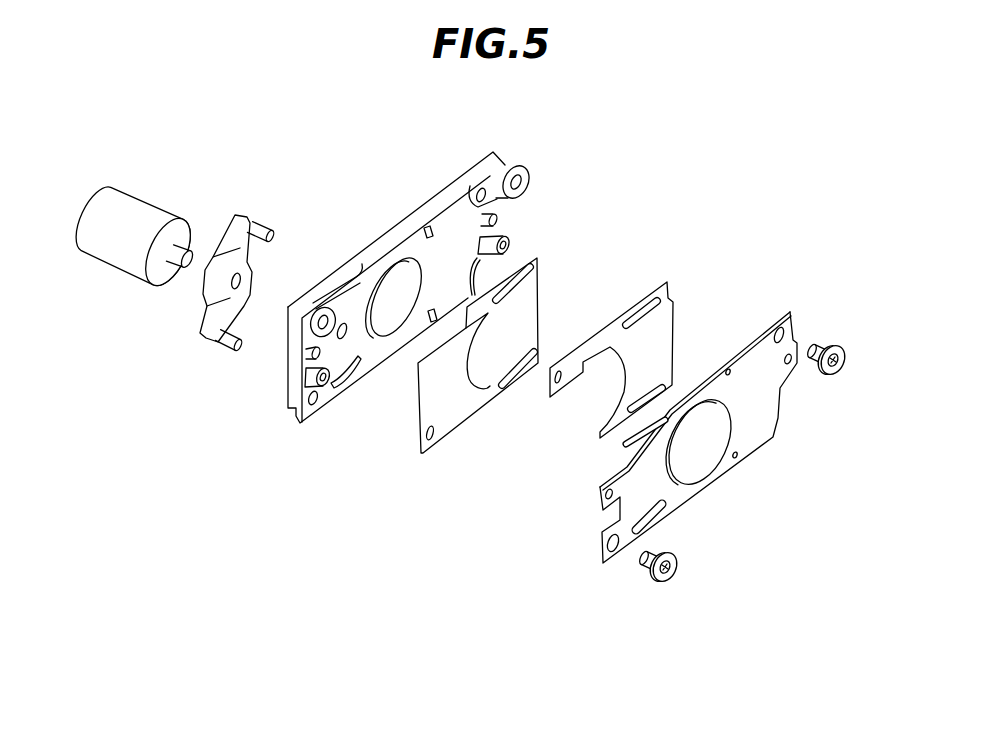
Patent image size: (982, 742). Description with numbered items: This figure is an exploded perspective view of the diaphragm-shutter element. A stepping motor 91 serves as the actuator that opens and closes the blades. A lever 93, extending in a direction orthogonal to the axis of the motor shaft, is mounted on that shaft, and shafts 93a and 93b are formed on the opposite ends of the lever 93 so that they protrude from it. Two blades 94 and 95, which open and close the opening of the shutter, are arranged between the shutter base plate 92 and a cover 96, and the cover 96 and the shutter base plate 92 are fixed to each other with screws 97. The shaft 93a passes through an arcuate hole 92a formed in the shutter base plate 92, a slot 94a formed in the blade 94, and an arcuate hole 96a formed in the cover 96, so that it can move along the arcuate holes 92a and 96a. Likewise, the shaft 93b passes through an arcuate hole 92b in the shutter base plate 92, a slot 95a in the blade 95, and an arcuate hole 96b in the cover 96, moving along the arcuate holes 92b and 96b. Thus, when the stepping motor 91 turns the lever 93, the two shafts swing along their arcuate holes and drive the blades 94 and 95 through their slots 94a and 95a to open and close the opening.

The stepping motor 91 is at (113, 188).
The shutter base plate 92 is at (445, 197).
The arcuate hole 92a is at (370, 263).
The arcuate hole 92b is at (350, 380).
The lever 93 is at (223, 235).
The shaft 93a is at (262, 228).
The shaft 93b is at (227, 349).
The blade 94 is at (678, 322).
The slot 94a is at (562, 367).
The blade 95 is at (417, 412).
The slot 95a is at (433, 439).
The cover 96 is at (767, 437).
The arcuate hole 96a is at (683, 405).
The arcuate hole 96b is at (670, 513).
The screw 97 is at (830, 341).